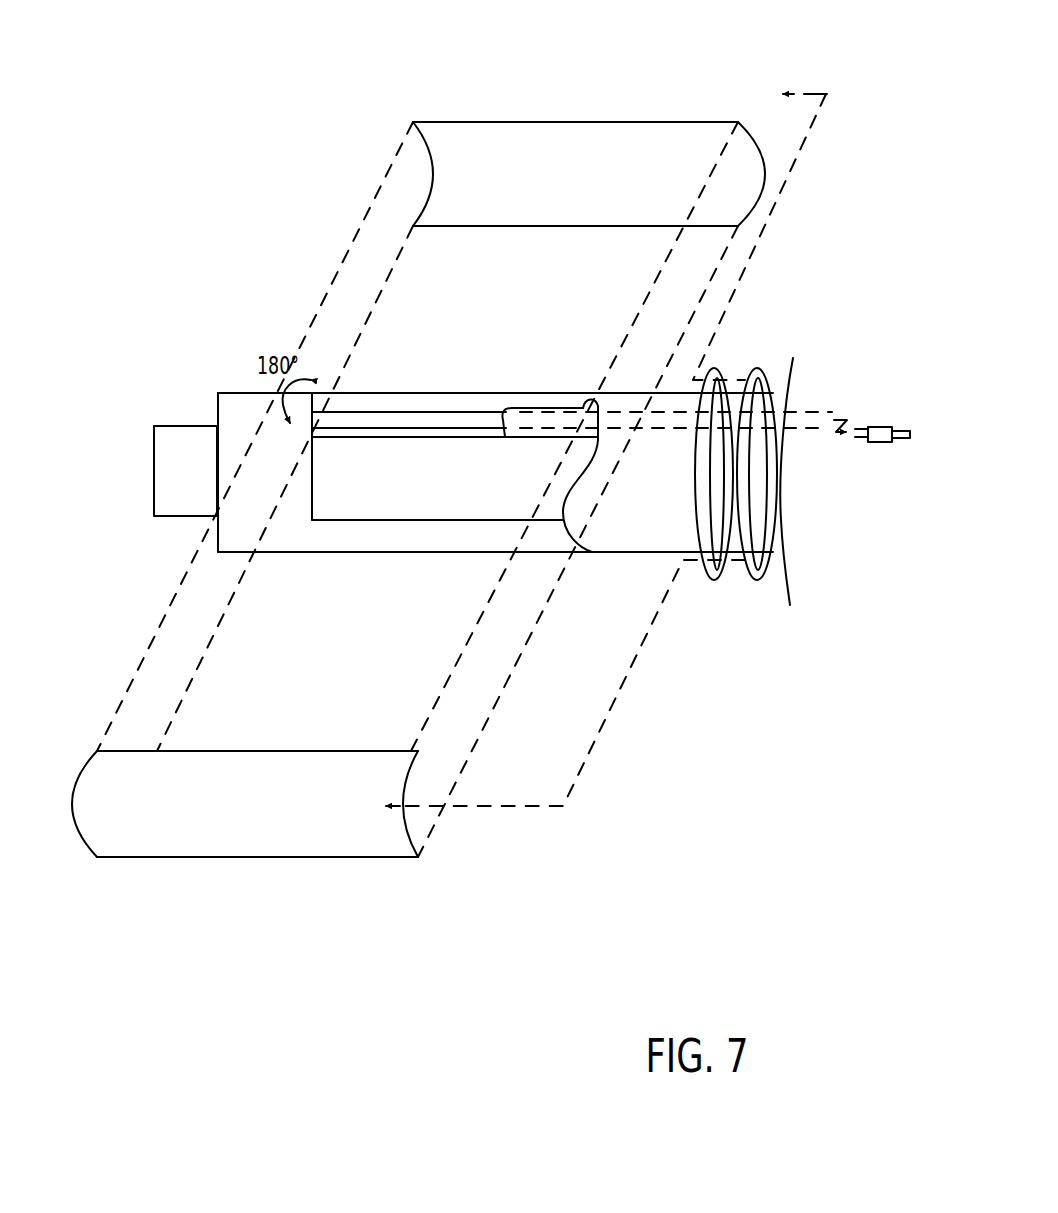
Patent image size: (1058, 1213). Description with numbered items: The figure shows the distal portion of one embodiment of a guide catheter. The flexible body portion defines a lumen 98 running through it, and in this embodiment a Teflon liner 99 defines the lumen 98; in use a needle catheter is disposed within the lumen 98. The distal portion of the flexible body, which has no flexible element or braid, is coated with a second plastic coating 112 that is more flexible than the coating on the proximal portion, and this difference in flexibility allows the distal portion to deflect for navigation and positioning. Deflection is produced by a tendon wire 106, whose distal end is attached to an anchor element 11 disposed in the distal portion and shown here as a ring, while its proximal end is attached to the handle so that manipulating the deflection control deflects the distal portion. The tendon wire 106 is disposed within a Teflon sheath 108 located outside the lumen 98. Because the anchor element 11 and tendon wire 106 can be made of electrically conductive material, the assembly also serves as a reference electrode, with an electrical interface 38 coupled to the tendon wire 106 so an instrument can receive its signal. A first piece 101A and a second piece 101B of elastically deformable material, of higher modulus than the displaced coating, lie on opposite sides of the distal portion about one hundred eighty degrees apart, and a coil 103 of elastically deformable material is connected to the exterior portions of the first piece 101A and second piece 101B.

The anchor element 11 is at (236, 390).
The electrical interface 38 is at (860, 427).
The lumen 98 is at (468, 508).
The Teflon liner 99 is at (177, 410).
The first piece of elastically deformable material 101A is at (240, 838).
The second piece of elastically deformable material 101B is at (565, 122).
The coil 103 is at (715, 375).
The tendon wire 106 is at (423, 409).
The Teflon sheath 108 is at (537, 404).
The second plastic coating 112 is at (580, 543).